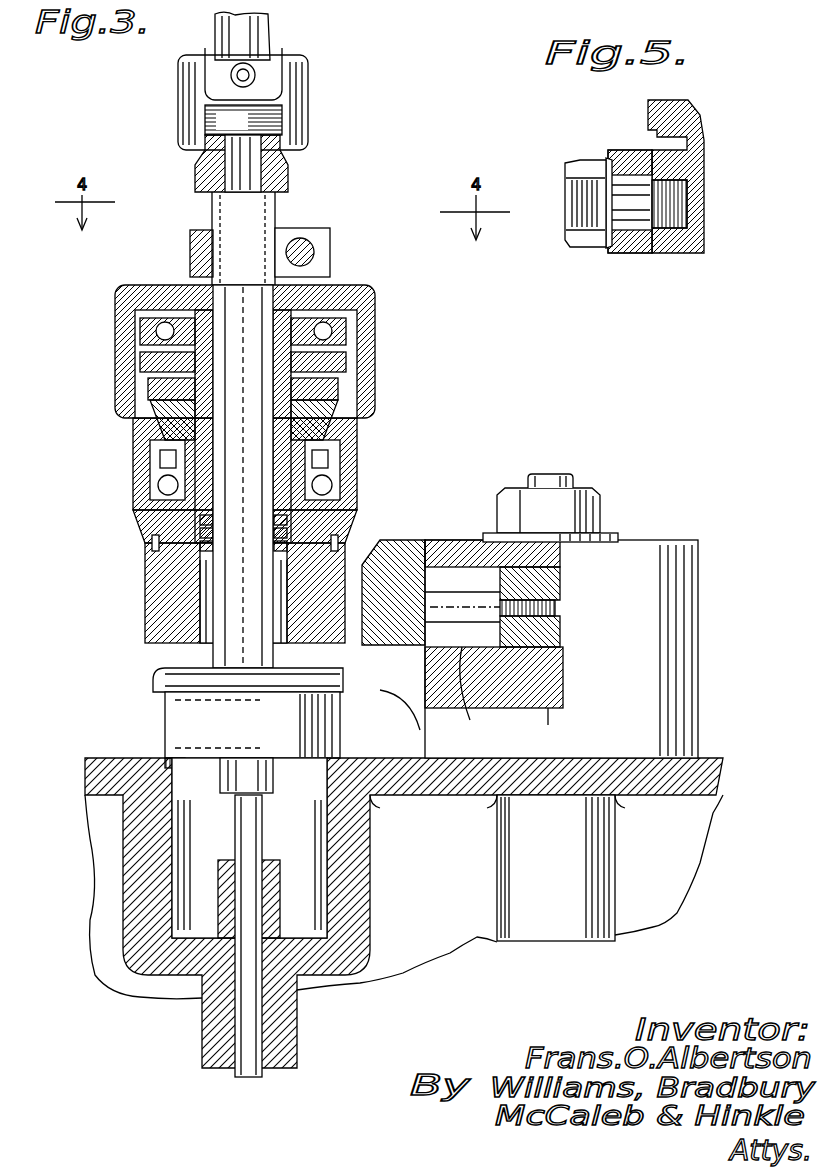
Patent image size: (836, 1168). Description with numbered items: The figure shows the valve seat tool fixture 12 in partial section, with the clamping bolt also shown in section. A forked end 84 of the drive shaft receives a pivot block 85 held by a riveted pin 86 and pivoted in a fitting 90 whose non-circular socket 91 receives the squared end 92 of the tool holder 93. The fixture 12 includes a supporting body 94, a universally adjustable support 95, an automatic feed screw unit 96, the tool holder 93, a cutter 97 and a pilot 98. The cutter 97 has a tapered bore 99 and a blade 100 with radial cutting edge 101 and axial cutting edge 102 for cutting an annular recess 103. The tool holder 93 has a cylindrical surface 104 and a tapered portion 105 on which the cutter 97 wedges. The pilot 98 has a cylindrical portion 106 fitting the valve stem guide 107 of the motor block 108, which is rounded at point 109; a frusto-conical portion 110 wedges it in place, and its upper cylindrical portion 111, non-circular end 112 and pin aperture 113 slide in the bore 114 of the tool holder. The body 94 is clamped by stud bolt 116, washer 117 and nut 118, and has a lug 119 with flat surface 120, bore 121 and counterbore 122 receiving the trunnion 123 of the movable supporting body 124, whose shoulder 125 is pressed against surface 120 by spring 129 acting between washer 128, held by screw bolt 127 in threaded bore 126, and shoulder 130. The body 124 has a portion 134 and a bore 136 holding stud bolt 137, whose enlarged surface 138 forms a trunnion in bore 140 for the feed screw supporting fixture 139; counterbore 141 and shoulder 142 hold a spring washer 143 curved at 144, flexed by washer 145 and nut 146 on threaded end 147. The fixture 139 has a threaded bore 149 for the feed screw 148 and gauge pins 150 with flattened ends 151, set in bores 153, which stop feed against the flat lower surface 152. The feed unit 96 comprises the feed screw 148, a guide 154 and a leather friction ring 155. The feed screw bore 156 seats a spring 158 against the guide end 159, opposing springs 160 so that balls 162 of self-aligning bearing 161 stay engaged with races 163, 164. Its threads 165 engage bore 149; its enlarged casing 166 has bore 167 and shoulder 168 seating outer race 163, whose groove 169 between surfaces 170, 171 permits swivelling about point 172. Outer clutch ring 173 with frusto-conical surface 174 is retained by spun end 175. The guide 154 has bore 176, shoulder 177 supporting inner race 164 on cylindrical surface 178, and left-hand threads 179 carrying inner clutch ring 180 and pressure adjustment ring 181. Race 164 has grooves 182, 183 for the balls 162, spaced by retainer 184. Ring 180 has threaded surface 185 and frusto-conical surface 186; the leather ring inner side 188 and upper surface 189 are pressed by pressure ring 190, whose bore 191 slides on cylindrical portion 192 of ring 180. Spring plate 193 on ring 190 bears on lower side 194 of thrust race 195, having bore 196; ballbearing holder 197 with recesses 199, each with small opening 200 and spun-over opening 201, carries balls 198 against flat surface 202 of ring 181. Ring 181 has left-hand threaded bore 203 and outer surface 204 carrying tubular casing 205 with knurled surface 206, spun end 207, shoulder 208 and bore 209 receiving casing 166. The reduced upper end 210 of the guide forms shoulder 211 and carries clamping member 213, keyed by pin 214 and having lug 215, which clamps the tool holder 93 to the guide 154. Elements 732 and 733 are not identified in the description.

In FIG. 3, the valve seat tool fixture 12 is at (703, 655).
In FIG. 3, the forked end 84 is at (272, 28).
In FIG. 3, the pivot block 85 is at (310, 62).
In FIG. 3, the riveted pin 86 is at (231, 77).
In FIG. 3, the fitting 90 is at (200, 180).
In FIG. 3, the non-circular socket 91 is at (258, 140).
In FIG. 3, the squared end 92 is at (288, 168).
In FIG. 3, the tool holder 93 is at (277, 193).
In FIG. 3, the supporting body 94 is at (455, 540).
In FIG. 3, the universally adjustable support 95 is at (374, 550).
In FIG. 3, the automatic feed screw unit 96 is at (360, 444).
In FIG. 3, the cutter 97 is at (170, 720).
In FIG. 3, the pilot 98 is at (266, 840).
In FIG. 3, the tapered bore 99 is at (160, 680).
In FIG. 3, the blade 100 is at (249, 848).
In FIG. 3, the radially extending cutting edge 101 is at (371, 848).
In FIG. 3, the axially extending cutting edge 102 is at (400, 756).
In FIG. 3, the annular recess 103 is at (175, 764).
In FIG. 3, the elongated cylindrical surface 104 is at (215, 200).
In FIG. 3, the tapered portion 105 is at (238, 663).
In FIG. 3, the cylindrical portion 106 is at (300, 1000).
In FIG. 3, the valve stem guide 107 is at (282, 903).
In FIG. 3, the motor block 108 is at (440, 796).
In FIG. 3, the point 109 is at (282, 878).
In FIG. 3, the frusto-conical portion 110 is at (236, 846).
In FIG. 3, the upper cylindrical portion 111 is at (178, 740).
In FIG. 3, the non-circular end 112 is at (232, 120).
In FIG. 3, the aperture 113 is at (137, 522).
In FIG. 3, the cylindrical bore 114 is at (244, 240).
In FIG. 3, the stud bolt 116 is at (551, 474).
In FIG. 3, the washer 117 is at (619, 537).
In FIG. 3, the nut 118 is at (601, 510).
In FIG. 3, the lug 119 is at (565, 680).
In FIG. 3, the flat surface 120 is at (434, 540).
In FIG. 3, the bore 121 is at (474, 560).
In FIG. 3, the counterbore 122 is at (561, 560).
In FIG. 3, the trunnion 123 is at (470, 720).
In FIG. 3, the movable supporting body 124 is at (405, 540).
In FIG. 5, the movable supporting body 124 is at (653, 120).
In FIG. 3, the annular shoulder 125 is at (420, 540).
In FIG. 3, the threaded bore 126 is at (561, 585).
In FIG. 3, the screw bolt 127 is at (563, 607).
In FIG. 3, the washer 128 is at (563, 630).
In FIG. 3, the helical compression spring 129 is at (563, 650).
In FIG. 3, the annular shoulder 130 is at (505, 554).
In FIG. 3, the portion 134 is at (462, 603).
In FIG. 5, the bore 136 is at (705, 162).
In FIG. 5, the threaded stud bolt 137 is at (690, 215).
In FIG. 5, the enlarged cylindrical surface 138 is at (627, 178).
In FIG. 3, the feed screw supporting fixture 139 is at (160, 625).
In FIG. 5, the feed screw supporting fixture 139 is at (698, 128).
In FIG. 5, the bore 140 is at (648, 255).
In FIG. 5, the counter-bore 141 is at (612, 246).
In FIG. 5, the annular shoulder 142 is at (622, 255).
In FIG. 5, the spring washer 143 is at (609, 160).
In FIG. 5, the laterally curved portion 144 is at (605, 205).
In FIG. 5, the washer 145 is at (604, 163).
In FIG. 5, the nut 146 is at (580, 172).
In FIG. 5, the threaded end 147 is at (570, 200).
In FIG. 3, the feed screw 148 is at (160, 602).
In FIG. 5, the feed screw 148 is at (690, 183).
In FIG. 3, the threaded bore 149 is at (150, 610).
In FIG. 5, the threaded bore 149 is at (705, 232).
In FIG. 3, the gauge pin 150 is at (150, 580).
In FIG. 3, the flattened end 151 is at (150, 560).
In FIG. 3, the flat lower surface 152 is at (152, 545).
In FIG. 3, the bore 153 is at (346, 512).
In FIG. 3, the guide 154 is at (276, 527).
In FIG. 3, the leather ring 155 is at (350, 400).
In FIG. 3, the enlarged bore 156 is at (380, 594).
In FIG. 3, the helical compression spring 158 is at (272, 586).
In FIG. 3, the end 159 is at (272, 550).
In FIG. 3, the springs 160 is at (145, 380).
In FIG. 3, the self-aligning anti-friction bearings 161 is at (356, 470).
In FIG. 3, the balls 162 is at (140, 505).
In FIG. 3, the outer race 163 is at (160, 490).
In FIG. 3, the inner race 164 is at (274, 477).
In FIG. 3, the outer threaded surface 165 is at (200, 592).
In FIG. 5, the outer threaded surface 165 is at (700, 254).
In FIG. 3, the enlarged part 166 is at (140, 485).
In FIG. 3, the enlarged bore 167 is at (150, 462).
In FIG. 3, the annular shoulder 168 is at (150, 548).
In FIG. 3, the annular groove 169 is at (140, 470).
In FIG. 3, the lower surface 170 is at (165, 540).
In FIG. 3, the upper surface 171 is at (138, 455).
In FIG. 3, the point 172 is at (274, 460).
In FIG. 3, the outer clutch ring 173 is at (140, 440).
In FIG. 3, the inner frusto-conical surface 174 is at (150, 396).
In FIG. 3, the spun-over end 175 is at (135, 425).
In FIG. 3, the bore 176 is at (274, 400).
In FIG. 3, the annular shoulder 177 is at (350, 490).
In FIG. 3, the outer cylindrical surface 178 is at (274, 440).
In FIG. 3, the threaded surface 179 is at (365, 330).
In FIG. 3, the inner clutch ring 180 is at (355, 365).
In FIG. 3, the pressure adjustment ring 181 is at (337, 292).
In FIG. 3, the annular groove 182 is at (276, 512).
In FIG. 3, the annular groove 183 is at (274, 495).
In FIG. 3, the retaining device 184 is at (274, 422).
In FIG. 3, the inner threaded surface 185 is at (358, 430).
In FIG. 3, the outer frusto-conical surface 186 is at (350, 415).
In FIG. 3, the inner side 188 is at (274, 362).
In FIG. 3, the upper surface 189 is at (274, 342).
In FIG. 3, the pressure ring 190 is at (355, 385).
In FIG. 3, the bore 191 is at (274, 302).
In FIG. 3, the cylindrical portion 192 is at (274, 382).
In FIG. 3, the spring plate 193 is at (140, 372).
In FIG. 3, the lower side 194 is at (125, 312).
In FIG. 3, the thrust bearing race 195 is at (135, 345).
In FIG. 3, the bore 196 is at (274, 322).
In FIG. 3, the ballbearing holder 197 is at (325, 286).
In FIG. 3, the ballbearings 198 is at (342, 286).
In FIG. 3, the spherical recesses 199 is at (352, 310).
In FIG. 3, the smaller opening 200 is at (376, 305).
In FIG. 3, the opening 201 is at (346, 300).
In FIG. 3, the flat surface 202 is at (172, 317).
In FIG. 3, the bore 203 is at (314, 244).
In FIG. 3, the outer cylindrical surface 204 is at (142, 318).
In FIG. 3, the tubular casing member 205 is at (138, 360).
In FIG. 3, the outer surface 206 is at (118, 312).
In FIG. 3, the spun-over end 207 is at (152, 317).
In FIG. 3, the shoulder 208 is at (130, 330).
In FIG. 3, the bore 209 is at (140, 392).
In FIG. 3, the upper end portion 210 is at (302, 237).
In FIG. 3, the annular shoulder 211 is at (219, 222).
In FIG. 3, the clamping member 213 is at (189, 246).
In FIG. 3, the pin 214 is at (197, 160).
In FIG. 3, the lug 215 is at (332, 232).
In FIG. 3, the clamp 732 is at (522, 535).
In FIG. 3, the clamp arm 733 is at (548, 725).